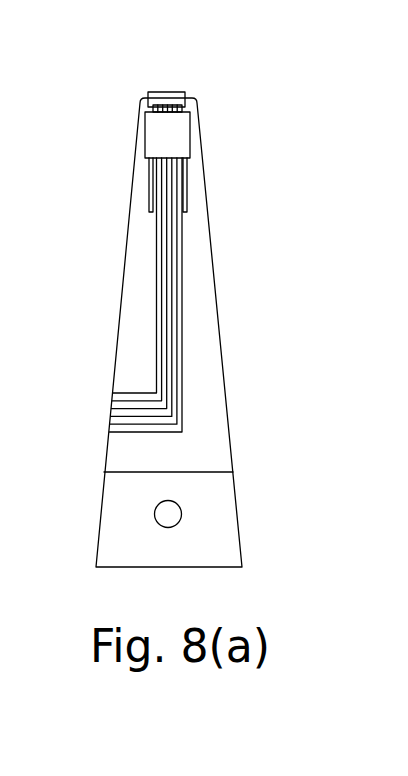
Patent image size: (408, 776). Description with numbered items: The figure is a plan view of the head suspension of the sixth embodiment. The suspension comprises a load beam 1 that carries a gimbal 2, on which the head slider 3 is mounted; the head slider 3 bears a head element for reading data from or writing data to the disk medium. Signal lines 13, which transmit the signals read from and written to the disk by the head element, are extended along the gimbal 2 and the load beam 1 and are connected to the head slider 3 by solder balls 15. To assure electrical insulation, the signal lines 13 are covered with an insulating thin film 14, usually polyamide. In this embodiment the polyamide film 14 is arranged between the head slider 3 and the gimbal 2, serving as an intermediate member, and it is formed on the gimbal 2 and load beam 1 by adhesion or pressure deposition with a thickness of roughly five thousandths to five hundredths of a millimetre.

The load beam 1 is at (210, 211).
The gimbal 2 is at (163, 97).
The head slider 3 is at (175, 137).
The signal lines 13 is at (173, 377).
The insulating thin film 14 is at (182, 310).
The solder balls 15 is at (177, 108).